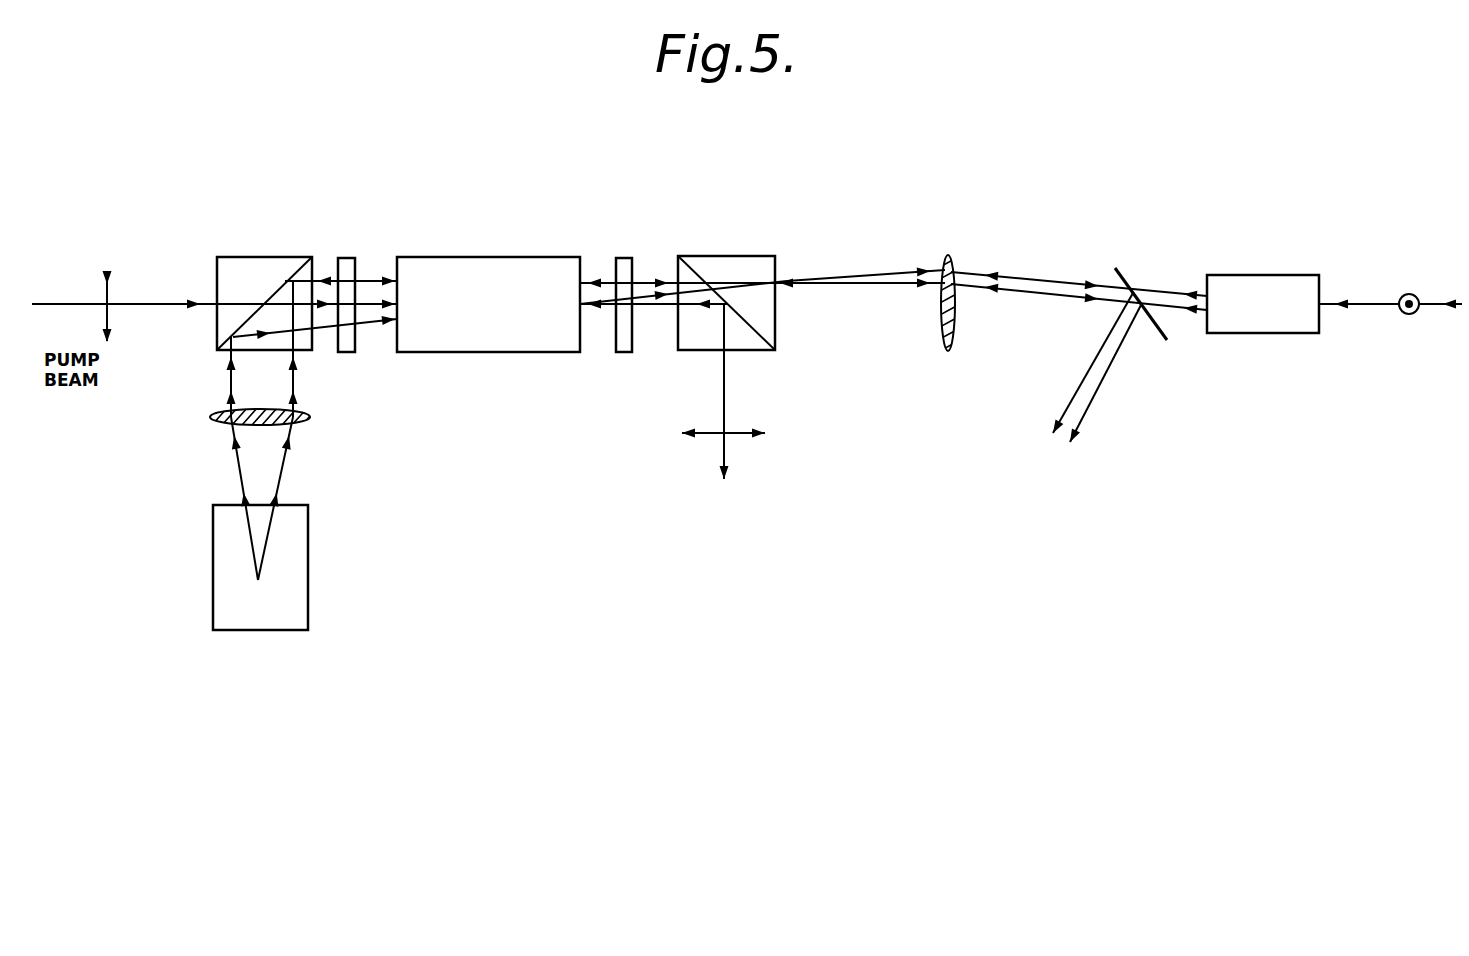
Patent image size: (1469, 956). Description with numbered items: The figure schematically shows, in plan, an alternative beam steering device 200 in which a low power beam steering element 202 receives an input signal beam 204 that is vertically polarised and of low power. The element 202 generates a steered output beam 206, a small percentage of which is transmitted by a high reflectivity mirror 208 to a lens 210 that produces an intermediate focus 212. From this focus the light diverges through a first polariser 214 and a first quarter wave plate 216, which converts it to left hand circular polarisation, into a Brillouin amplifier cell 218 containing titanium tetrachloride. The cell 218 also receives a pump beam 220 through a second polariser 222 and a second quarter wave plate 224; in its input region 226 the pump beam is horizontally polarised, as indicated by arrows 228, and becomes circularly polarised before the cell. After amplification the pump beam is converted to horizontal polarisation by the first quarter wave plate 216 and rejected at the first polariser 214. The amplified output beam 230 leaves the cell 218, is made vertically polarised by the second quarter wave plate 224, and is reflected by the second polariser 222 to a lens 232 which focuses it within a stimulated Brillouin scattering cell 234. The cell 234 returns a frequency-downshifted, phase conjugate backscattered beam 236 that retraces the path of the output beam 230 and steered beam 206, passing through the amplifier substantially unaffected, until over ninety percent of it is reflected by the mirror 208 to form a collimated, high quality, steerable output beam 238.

The beam steering device 200 is at (743, 197).
The low power beam steering element 202 is at (1270, 333).
The input signal beam 204 is at (1409, 294).
The steered output beam 206 is at (594, 280).
The high reflectivity mirror 208 is at (1117, 266).
The lens 210 is at (955, 318).
The intermediate focus 212 is at (825, 287).
The first polariser 214 is at (763, 350).
The first quarter wave plate 216 is at (622, 352).
The Brillouin amplifier cell 218 is at (510, 352).
The pump beam 220 is at (368, 301).
The second polariser 222 is at (268, 257).
The second quarter wave plate 224 is at (348, 352).
The input region 226 is at (168, 284).
The arrows 228 is at (106, 272).
The output beam 230 is at (380, 328).
The lens 232 is at (312, 417).
The stimulated Brillouin scattering cell 234 is at (308, 543).
The backscattered beam 236 is at (322, 279).
The collimated output beam 238 is at (1020, 470).